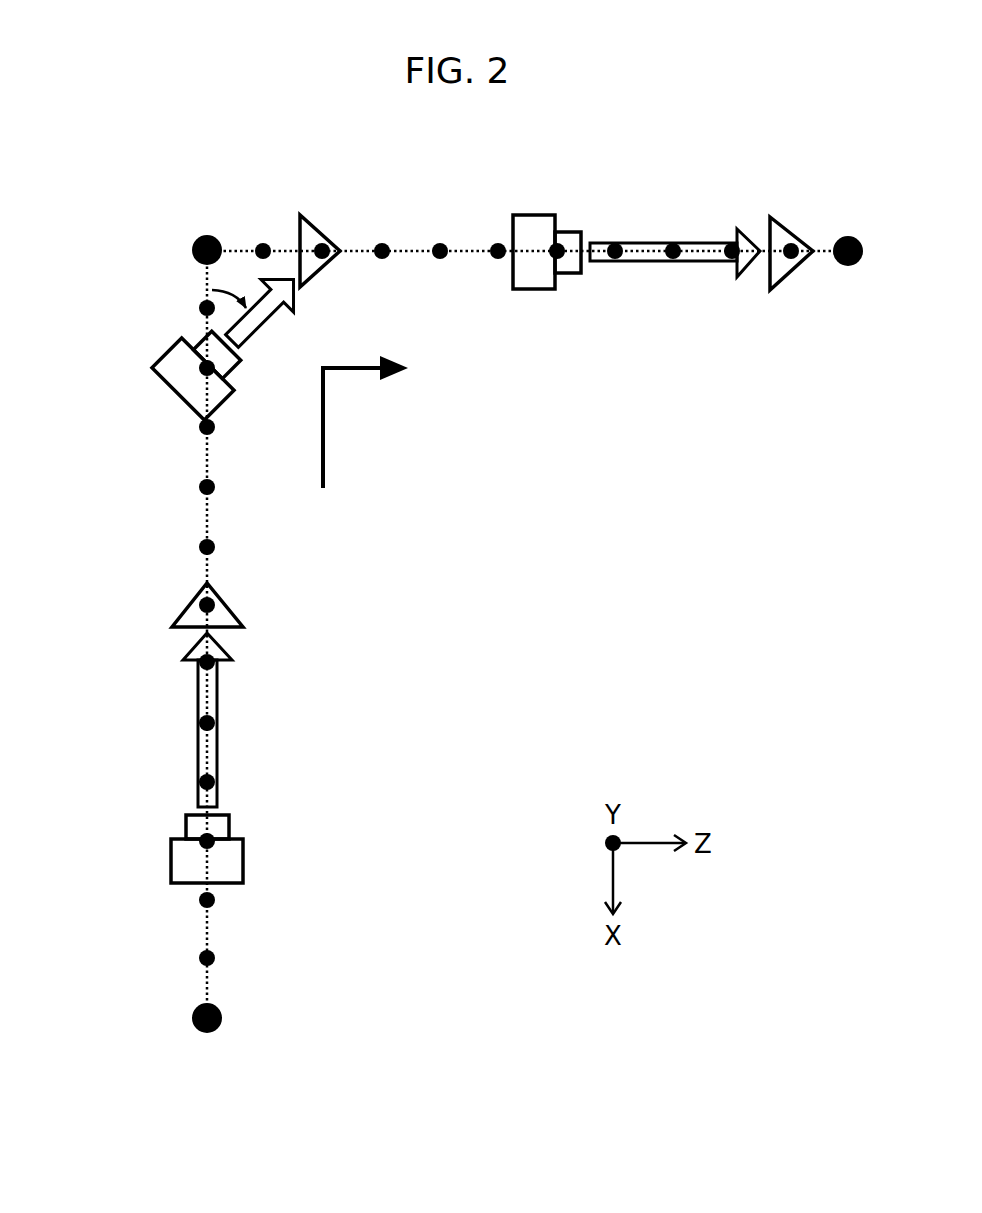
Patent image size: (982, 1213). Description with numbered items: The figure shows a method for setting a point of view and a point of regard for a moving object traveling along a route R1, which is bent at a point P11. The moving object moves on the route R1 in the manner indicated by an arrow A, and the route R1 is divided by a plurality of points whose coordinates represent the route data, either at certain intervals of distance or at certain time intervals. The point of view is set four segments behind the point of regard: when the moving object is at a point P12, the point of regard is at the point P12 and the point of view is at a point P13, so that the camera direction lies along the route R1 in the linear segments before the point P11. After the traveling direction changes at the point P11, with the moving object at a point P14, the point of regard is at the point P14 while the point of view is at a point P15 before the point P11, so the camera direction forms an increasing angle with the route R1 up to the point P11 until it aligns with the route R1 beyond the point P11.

The point P11 is at (192, 250).
The point P12 is at (170, 613).
The point P13 is at (160, 847).
The point P14 is at (317, 211).
The point P15 is at (147, 367).
The route R1 is at (207, 928).
The arrow A is at (361, 441).